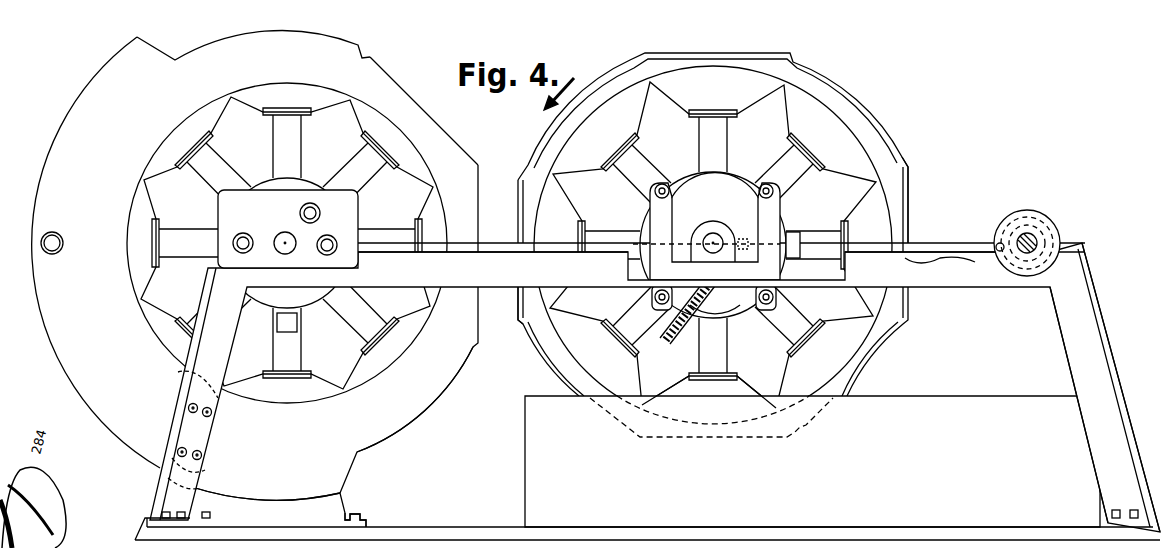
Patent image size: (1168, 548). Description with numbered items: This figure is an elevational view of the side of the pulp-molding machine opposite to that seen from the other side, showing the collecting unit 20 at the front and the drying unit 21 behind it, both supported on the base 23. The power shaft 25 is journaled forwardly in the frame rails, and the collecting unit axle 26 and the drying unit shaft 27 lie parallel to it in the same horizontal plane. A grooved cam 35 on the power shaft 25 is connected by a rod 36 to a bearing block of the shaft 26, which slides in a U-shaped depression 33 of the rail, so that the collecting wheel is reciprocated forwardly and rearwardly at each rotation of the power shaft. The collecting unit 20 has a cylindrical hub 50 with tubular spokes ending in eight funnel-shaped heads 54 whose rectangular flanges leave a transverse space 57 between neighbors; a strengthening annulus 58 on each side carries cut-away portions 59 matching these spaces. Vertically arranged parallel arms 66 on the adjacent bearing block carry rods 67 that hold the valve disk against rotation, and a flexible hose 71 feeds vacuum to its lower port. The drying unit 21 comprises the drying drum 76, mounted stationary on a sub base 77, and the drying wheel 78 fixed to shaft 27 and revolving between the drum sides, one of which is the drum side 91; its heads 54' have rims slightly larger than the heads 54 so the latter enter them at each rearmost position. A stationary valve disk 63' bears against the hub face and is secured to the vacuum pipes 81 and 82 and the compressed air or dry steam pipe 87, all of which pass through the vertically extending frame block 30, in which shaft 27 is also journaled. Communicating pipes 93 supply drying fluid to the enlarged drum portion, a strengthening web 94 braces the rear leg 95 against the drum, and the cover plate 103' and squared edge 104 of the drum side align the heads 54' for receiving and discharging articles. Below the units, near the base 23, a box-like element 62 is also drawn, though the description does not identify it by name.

The collecting unit 20 is at (713, 208).
The drying unit 21 is at (307, 265).
The base 23 is at (458, 522).
The power shaft 25 is at (1000, 243).
The collecting unit axle 26 is at (705, 240).
The drying unit shaft 27 is at (280, 250).
The frame block 30 is at (222, 202).
The U-shaped depression 33 is at (813, 252).
The grooved cam 35 is at (1045, 222).
The rod 36 is at (945, 252).
The cylindrical hub 50 is at (708, 285).
The funnel-shaped head 54 is at (799, 164).
The head of drying wheel 54' is at (242, 268).
The transverse space 57 is at (912, 163).
The strengthening annulus 58 is at (850, 116).
The cut-away portion 59 is at (522, 330).
The trough 62 is at (812, 451).
The stationary valve disk 63' is at (310, 331).
The parallel arms 66 is at (758, 206).
The rod 67 is at (762, 308).
The flexible hose 71 is at (665, 340).
The drying drum 76 is at (60, 367).
The sub base 77 is at (317, 515).
The drying wheel 78 is at (360, 169).
The vacuum pipe 81 is at (330, 237).
The vacuum pipe 82 is at (237, 250).
The compressed air or dry steam pipe 87 is at (300, 214).
The drum side 91 is at (266, 468).
The communicating pipe 93 is at (64, 244).
The strengthening web 94 is at (180, 395).
The rear leg 95 is at (1060, 330).
The cover plate 103' is at (415, 403).
The squared edge 104 is at (405, 90).